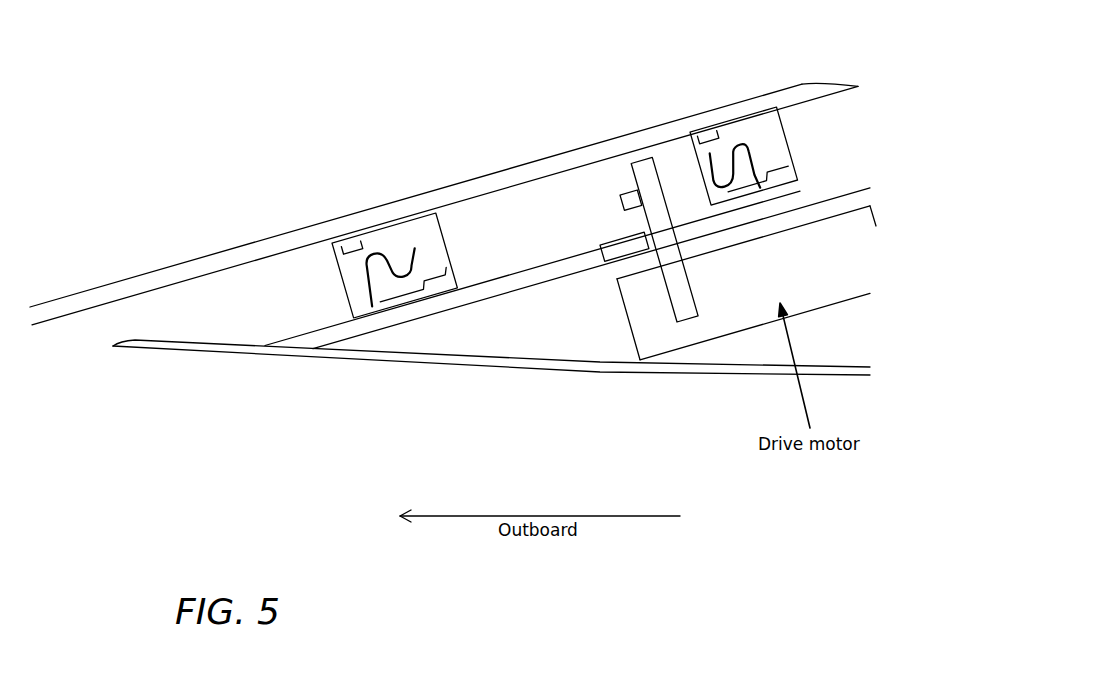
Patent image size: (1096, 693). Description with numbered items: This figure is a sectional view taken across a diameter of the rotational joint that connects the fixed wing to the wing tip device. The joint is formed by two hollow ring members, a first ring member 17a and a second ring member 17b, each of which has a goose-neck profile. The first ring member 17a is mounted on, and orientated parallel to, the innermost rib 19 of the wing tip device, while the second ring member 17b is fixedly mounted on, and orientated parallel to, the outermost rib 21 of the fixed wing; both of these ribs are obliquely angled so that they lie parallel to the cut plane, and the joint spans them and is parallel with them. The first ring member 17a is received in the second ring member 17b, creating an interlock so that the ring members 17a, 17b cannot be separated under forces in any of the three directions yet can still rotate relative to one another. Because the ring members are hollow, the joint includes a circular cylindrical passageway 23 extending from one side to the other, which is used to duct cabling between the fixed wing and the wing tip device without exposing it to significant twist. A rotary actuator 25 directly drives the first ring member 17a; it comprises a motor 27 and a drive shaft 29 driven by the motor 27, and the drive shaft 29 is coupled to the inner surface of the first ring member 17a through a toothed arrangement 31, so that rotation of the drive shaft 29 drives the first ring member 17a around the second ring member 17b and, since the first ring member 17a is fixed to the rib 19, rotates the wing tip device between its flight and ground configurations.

The first ring member 17a is at (420, 235).
The second ring member 17b is at (326, 292).
The innermost rib 19 is at (478, 165).
The outermost rib 21 is at (527, 305).
The circular cylindrical passageway 23 is at (540, 236).
The rotary actuator 25 is at (854, 340).
The motor 27 is at (840, 263).
The drive shaft 29 is at (658, 224).
The toothed arrangement 31 is at (663, 176).